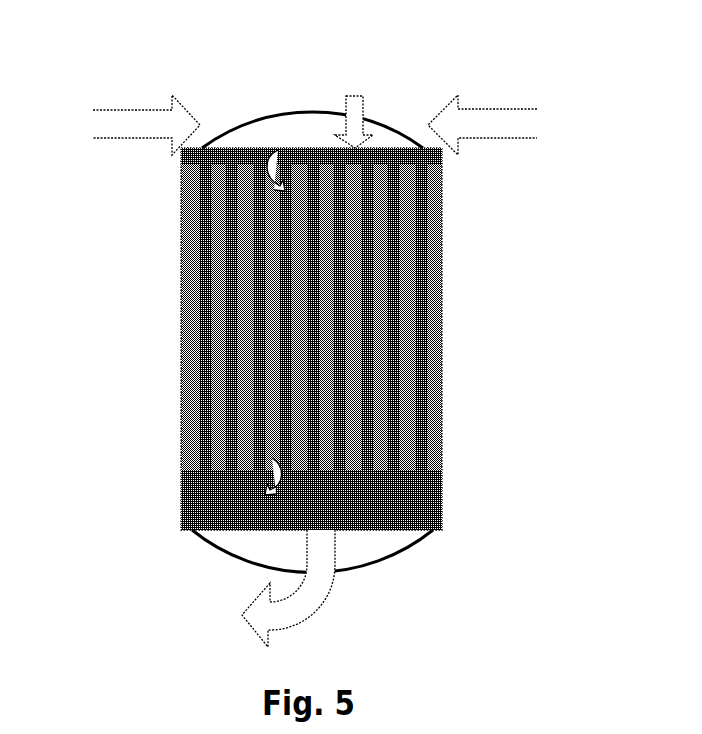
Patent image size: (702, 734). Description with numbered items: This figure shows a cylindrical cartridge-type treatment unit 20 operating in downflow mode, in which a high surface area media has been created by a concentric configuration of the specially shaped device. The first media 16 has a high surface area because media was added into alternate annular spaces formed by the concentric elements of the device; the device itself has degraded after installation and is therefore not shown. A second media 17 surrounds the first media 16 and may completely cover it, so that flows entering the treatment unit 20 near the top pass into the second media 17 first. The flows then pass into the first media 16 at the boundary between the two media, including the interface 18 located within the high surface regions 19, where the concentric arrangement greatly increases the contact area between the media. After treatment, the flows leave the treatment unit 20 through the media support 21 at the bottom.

The first media 16 is at (390, 498).
The second media 17 is at (390, 155).
The interface 18 is at (248, 292).
The high surface regions 19 is at (243, 238).
The treatment unit 20 is at (265, 115).
The media support 21 is at (220, 530).